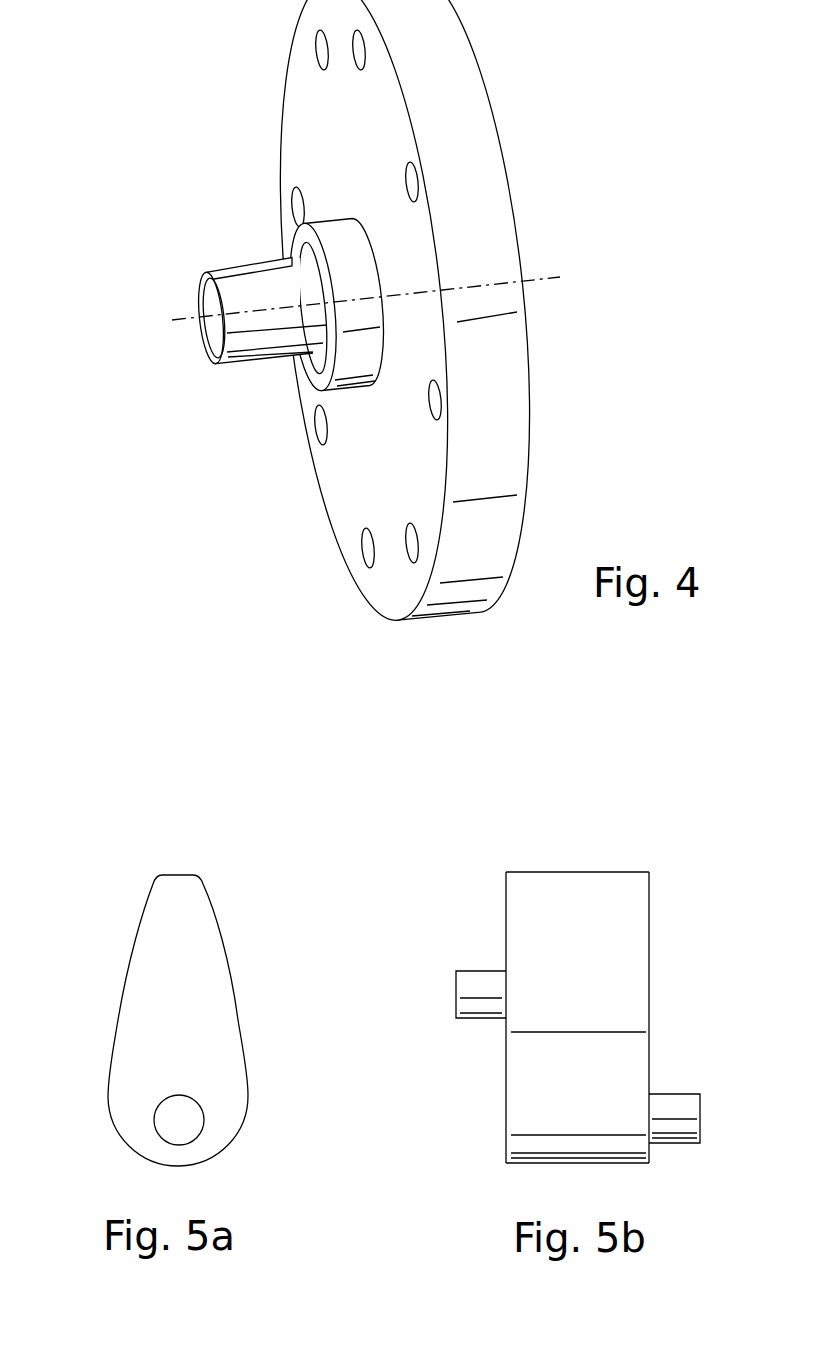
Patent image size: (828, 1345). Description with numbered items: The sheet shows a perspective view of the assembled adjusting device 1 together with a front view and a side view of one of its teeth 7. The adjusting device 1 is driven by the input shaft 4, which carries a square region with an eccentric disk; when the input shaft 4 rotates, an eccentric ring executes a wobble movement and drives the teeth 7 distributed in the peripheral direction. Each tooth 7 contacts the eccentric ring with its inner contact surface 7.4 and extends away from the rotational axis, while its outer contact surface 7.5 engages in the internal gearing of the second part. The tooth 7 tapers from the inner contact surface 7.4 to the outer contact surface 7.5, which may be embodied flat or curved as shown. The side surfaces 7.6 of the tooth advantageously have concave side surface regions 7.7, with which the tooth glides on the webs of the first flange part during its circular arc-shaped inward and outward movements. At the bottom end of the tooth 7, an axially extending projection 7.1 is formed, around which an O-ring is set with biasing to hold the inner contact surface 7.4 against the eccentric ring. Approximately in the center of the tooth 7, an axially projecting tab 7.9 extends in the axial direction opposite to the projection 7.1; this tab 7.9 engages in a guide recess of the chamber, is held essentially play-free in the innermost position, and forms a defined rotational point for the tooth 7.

In FIG. 4, the adjusting device 1 is at (264, 539).
In FIG. 4, the input shaft 4 is at (205, 298).
In FIG. 5A, the tooth 7 is at (199, 979).
In FIG. 5B, the tooth 7 is at (540, 995).
In FIG. 5A, the axially extending projection 7.1 is at (188, 1123).
In FIG. 5B, the axially extending projection 7.1 is at (672, 1108).
In FIG. 5A, the inner contact surface 7.4 is at (158, 1160).
In FIG. 5B, the inner contact surface 7.4 is at (560, 1176).
In FIG. 5A, the outer contact surface 7.5 is at (188, 872).
In FIG. 5B, the outer contact surface 7.5 is at (578, 872).
In FIG. 5A, the side surface 7.6 is at (227, 940).
In FIG. 5A, the concave side surface region 7.7 is at (242, 1038).
In FIG. 5B, the axially projecting tab 7.9 is at (485, 978).